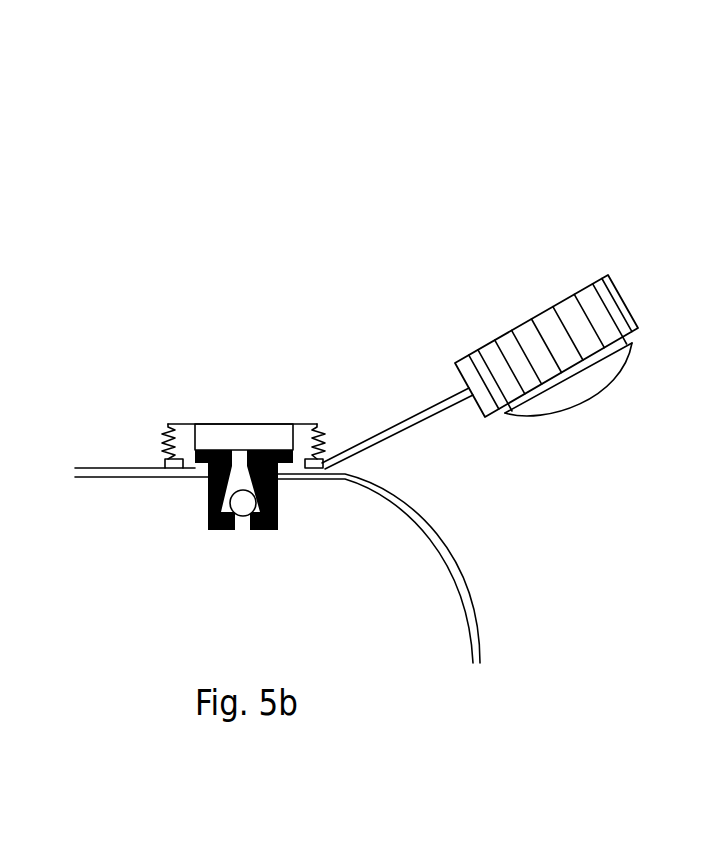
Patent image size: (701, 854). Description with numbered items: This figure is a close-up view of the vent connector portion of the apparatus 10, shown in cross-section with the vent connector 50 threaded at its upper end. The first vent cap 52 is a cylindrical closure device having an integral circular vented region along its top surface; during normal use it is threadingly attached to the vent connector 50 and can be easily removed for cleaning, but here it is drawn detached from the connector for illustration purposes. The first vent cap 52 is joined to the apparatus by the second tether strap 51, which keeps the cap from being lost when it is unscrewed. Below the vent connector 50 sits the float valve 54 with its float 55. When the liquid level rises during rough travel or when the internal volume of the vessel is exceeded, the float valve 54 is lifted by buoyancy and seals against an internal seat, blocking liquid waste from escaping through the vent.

The apparatus 10 is at (346, 357).
The vent connector 50 is at (165, 437).
The second tether strap 51 is at (412, 427).
The first vent cap 52 is at (497, 342).
The float valve 54 is at (208, 508).
The float 55 is at (237, 502).